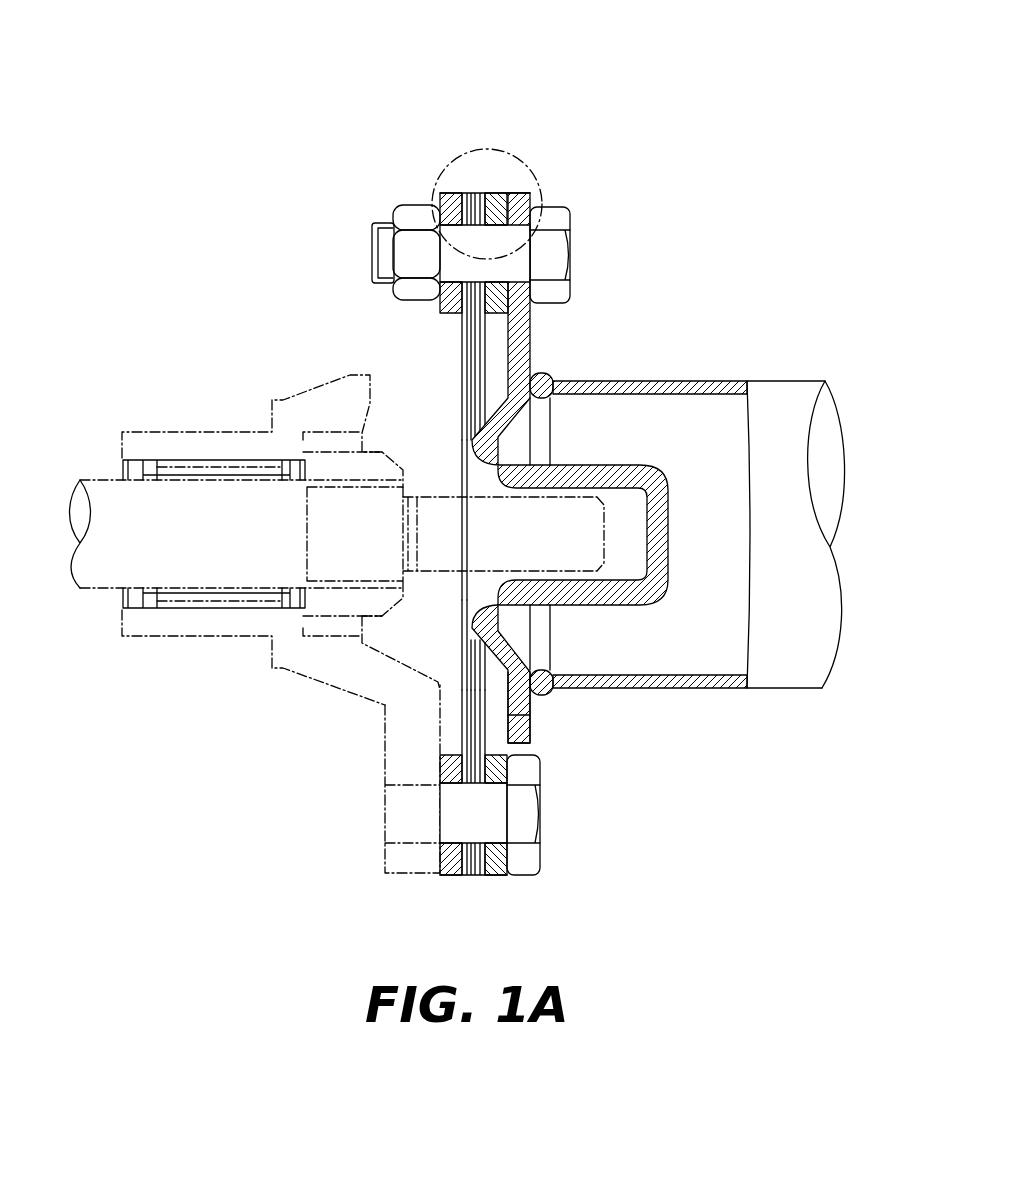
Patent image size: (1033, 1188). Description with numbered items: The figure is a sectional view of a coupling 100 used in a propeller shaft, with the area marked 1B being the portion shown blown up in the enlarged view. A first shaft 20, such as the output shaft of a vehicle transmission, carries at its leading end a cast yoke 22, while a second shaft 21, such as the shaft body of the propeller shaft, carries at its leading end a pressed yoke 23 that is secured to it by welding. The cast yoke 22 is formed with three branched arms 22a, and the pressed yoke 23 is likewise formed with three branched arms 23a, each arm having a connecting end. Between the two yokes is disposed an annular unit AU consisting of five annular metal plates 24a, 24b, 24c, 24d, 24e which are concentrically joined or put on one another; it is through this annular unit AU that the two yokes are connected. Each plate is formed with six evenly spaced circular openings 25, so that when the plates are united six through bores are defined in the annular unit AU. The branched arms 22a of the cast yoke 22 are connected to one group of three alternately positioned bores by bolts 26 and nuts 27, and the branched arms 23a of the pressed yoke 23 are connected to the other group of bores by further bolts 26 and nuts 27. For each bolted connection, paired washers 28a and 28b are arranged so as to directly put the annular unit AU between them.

The coupling 100 is at (670, 64).
The blown-up area 1B is at (483, 150).
The first shaft 20 is at (203, 567).
The second shaft 21 is at (695, 689).
The cast yoke 22 is at (308, 672).
The branched arms 22a is at (397, 808).
The pressed yoke 23 is at (522, 335).
The branched arms 23a is at (527, 192).
The annular metal plate 24a is at (461, 390).
The annular metal plate 24b is at (463, 654).
The annular metal plate 24c is at (461, 713).
The annular metal plate 24d is at (487, 698).
The annular metal plate 24e is at (505, 755).
The circular openings 25 is at (445, 245).
The bolts 26 is at (555, 258).
The nuts 27 is at (408, 215).
The washer 28a is at (443, 311).
The washer 28b is at (492, 310).
The annular unit AU is at (462, 452).